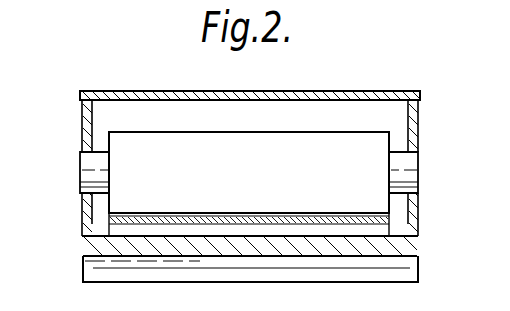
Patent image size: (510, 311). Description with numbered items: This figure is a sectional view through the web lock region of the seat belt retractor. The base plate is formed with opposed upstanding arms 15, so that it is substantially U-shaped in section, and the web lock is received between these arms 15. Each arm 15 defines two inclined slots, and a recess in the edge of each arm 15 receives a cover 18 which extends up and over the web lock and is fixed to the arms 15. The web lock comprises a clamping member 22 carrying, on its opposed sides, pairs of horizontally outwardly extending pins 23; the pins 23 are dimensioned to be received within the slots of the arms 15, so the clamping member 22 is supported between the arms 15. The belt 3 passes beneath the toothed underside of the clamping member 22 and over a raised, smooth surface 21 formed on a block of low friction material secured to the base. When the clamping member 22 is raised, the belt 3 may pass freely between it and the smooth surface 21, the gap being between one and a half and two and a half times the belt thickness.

The cover 18 is at (331, 97).
The upstanding arms 15 is at (88, 118).
The pins 23 is at (90, 162).
The clamping member 22 is at (151, 160).
The belt 3 is at (378, 234).
The raised smooth surface 21 is at (98, 229).